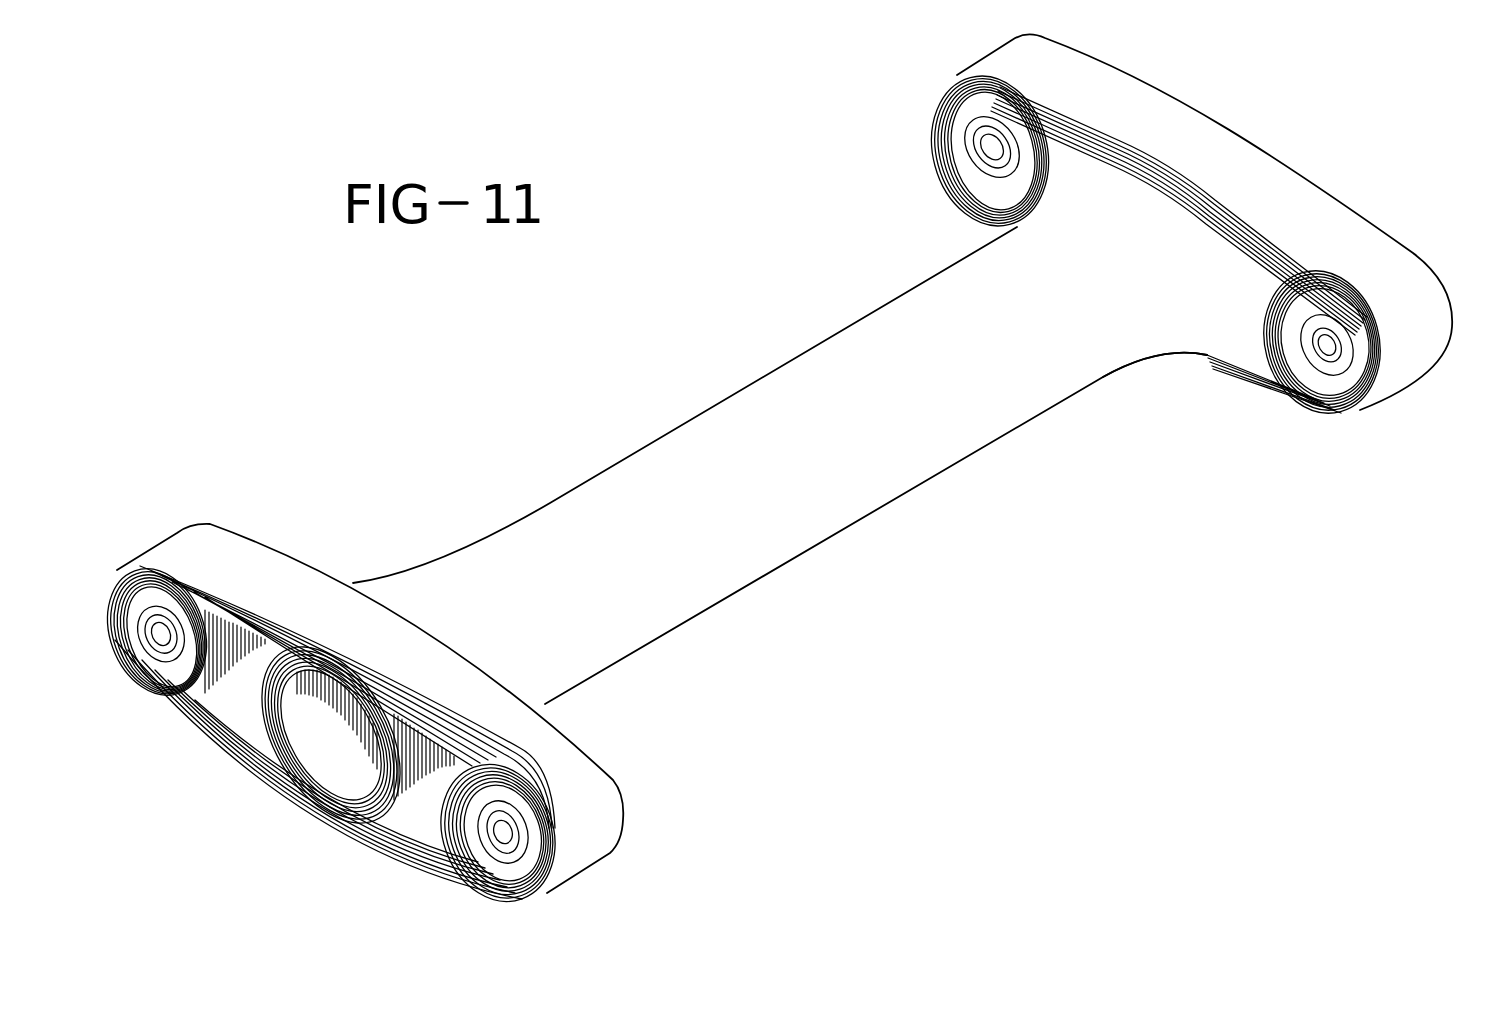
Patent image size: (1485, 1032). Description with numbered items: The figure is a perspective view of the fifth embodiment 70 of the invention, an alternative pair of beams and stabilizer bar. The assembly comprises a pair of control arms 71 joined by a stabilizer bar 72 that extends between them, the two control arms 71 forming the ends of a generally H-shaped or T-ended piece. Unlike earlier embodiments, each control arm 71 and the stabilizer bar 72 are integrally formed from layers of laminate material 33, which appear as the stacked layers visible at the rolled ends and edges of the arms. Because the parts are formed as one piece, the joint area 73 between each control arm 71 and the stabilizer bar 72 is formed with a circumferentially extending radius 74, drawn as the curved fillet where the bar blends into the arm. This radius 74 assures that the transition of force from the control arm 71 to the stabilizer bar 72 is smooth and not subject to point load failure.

The fifth embodiment 70 is at (670, 407).
The control arm 71 is at (772, 486).
The stabilizer bar 72 is at (862, 507).
The joint area 73 is at (1110, 195).
The circumferentially extending radius 74 is at (1170, 356).
The layers of laminate material 33 is at (1341, 414).